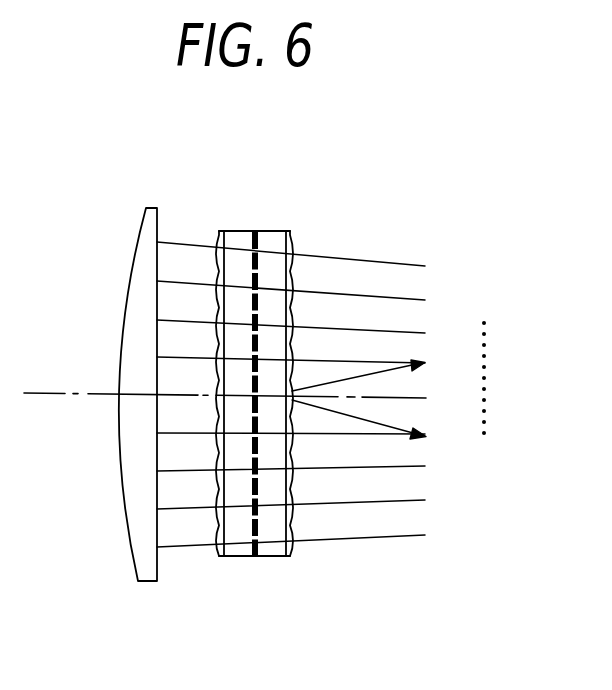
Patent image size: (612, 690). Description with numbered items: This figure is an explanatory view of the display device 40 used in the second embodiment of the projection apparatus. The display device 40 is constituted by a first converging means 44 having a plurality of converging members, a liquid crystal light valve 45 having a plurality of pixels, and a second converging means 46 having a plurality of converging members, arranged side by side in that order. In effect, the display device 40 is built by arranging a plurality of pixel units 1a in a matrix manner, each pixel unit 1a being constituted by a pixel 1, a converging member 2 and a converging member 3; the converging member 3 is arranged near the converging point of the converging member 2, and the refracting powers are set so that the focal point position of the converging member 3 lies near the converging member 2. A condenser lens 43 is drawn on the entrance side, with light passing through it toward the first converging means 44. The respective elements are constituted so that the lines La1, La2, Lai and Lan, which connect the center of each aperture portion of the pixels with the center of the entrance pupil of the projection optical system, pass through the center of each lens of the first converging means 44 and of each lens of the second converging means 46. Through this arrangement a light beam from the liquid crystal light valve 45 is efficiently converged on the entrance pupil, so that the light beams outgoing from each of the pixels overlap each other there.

The display device 40 is at (263, 328).
The condenser lens 43 is at (150, 200).
The first converging means 44 is at (211, 223).
The liquid crystal light valve 45 is at (249, 223).
The second converging means 46 is at (307, 353).
The pixel 1 is at (240, 548).
The converging member 2 is at (204, 548).
The converging member 3 is at (284, 587).
The pixel unit 1a is at (247, 612).
The line La1 is at (402, 257).
The line La2 is at (400, 291).
The line Lai is at (402, 457).
The line Lan is at (402, 526).